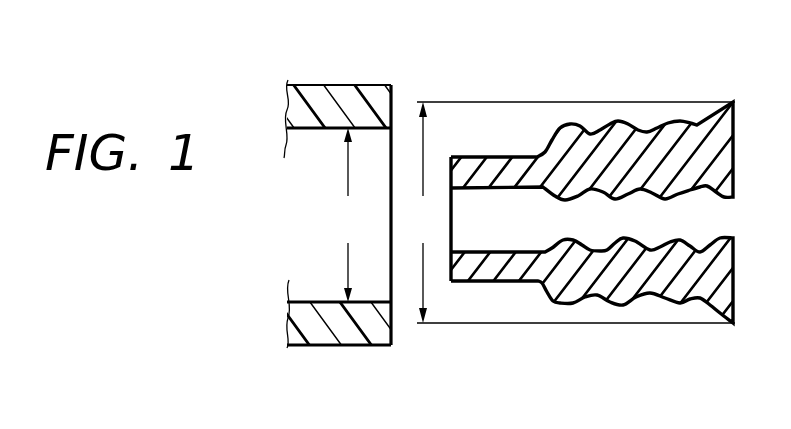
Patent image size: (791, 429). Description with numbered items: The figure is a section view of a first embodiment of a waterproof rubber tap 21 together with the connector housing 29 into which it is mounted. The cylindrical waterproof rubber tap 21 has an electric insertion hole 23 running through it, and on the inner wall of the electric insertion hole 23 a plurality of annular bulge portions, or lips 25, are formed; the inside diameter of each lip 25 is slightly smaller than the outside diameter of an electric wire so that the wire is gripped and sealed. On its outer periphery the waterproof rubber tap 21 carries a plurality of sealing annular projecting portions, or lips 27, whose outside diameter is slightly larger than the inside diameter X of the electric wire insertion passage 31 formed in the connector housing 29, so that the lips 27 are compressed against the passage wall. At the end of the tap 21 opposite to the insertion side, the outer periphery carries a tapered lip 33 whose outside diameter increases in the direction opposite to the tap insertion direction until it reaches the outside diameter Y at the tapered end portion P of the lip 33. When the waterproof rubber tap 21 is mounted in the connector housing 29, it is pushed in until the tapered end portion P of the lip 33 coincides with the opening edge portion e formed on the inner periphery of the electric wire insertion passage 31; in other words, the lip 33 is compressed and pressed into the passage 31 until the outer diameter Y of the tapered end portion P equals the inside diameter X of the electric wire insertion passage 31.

The waterproof rubber tap 21 is at (527, 150).
The electric insertion hole 23 is at (505, 232).
The annular bulge portions (lips) 25 is at (667, 196).
The sealing annular projecting portions (lips) 27 is at (670, 118).
The connector housing 29 is at (355, 85).
The electric wire insertion passage 31 is at (326, 305).
The tapered lip 33 is at (710, 118).
The opening edge portion e is at (391, 302).
The tapered end portion P is at (730, 327).
The inside diameter of the electric insertion passage X is at (348, 215).
The outside diameter of the tapered end portion Y is at (574, 212).